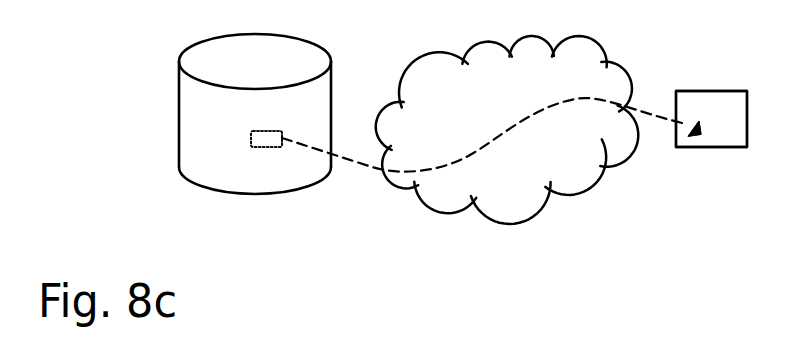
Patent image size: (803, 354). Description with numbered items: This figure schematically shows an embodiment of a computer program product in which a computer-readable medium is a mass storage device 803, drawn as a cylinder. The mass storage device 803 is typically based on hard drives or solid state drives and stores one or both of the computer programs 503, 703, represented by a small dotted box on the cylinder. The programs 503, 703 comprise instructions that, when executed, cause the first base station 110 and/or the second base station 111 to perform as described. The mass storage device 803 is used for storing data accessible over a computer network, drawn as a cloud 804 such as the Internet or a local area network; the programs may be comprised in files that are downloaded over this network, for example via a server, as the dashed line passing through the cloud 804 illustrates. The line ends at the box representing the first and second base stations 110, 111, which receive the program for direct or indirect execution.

The mass storage device 803 is at (178, 114).
The computer program 503 is at (253, 147).
The computer program 703 is at (253, 147).
The network cloud 804 is at (435, 212).
The first base station 110 is at (691, 147).
The second base station 111 is at (691, 147).